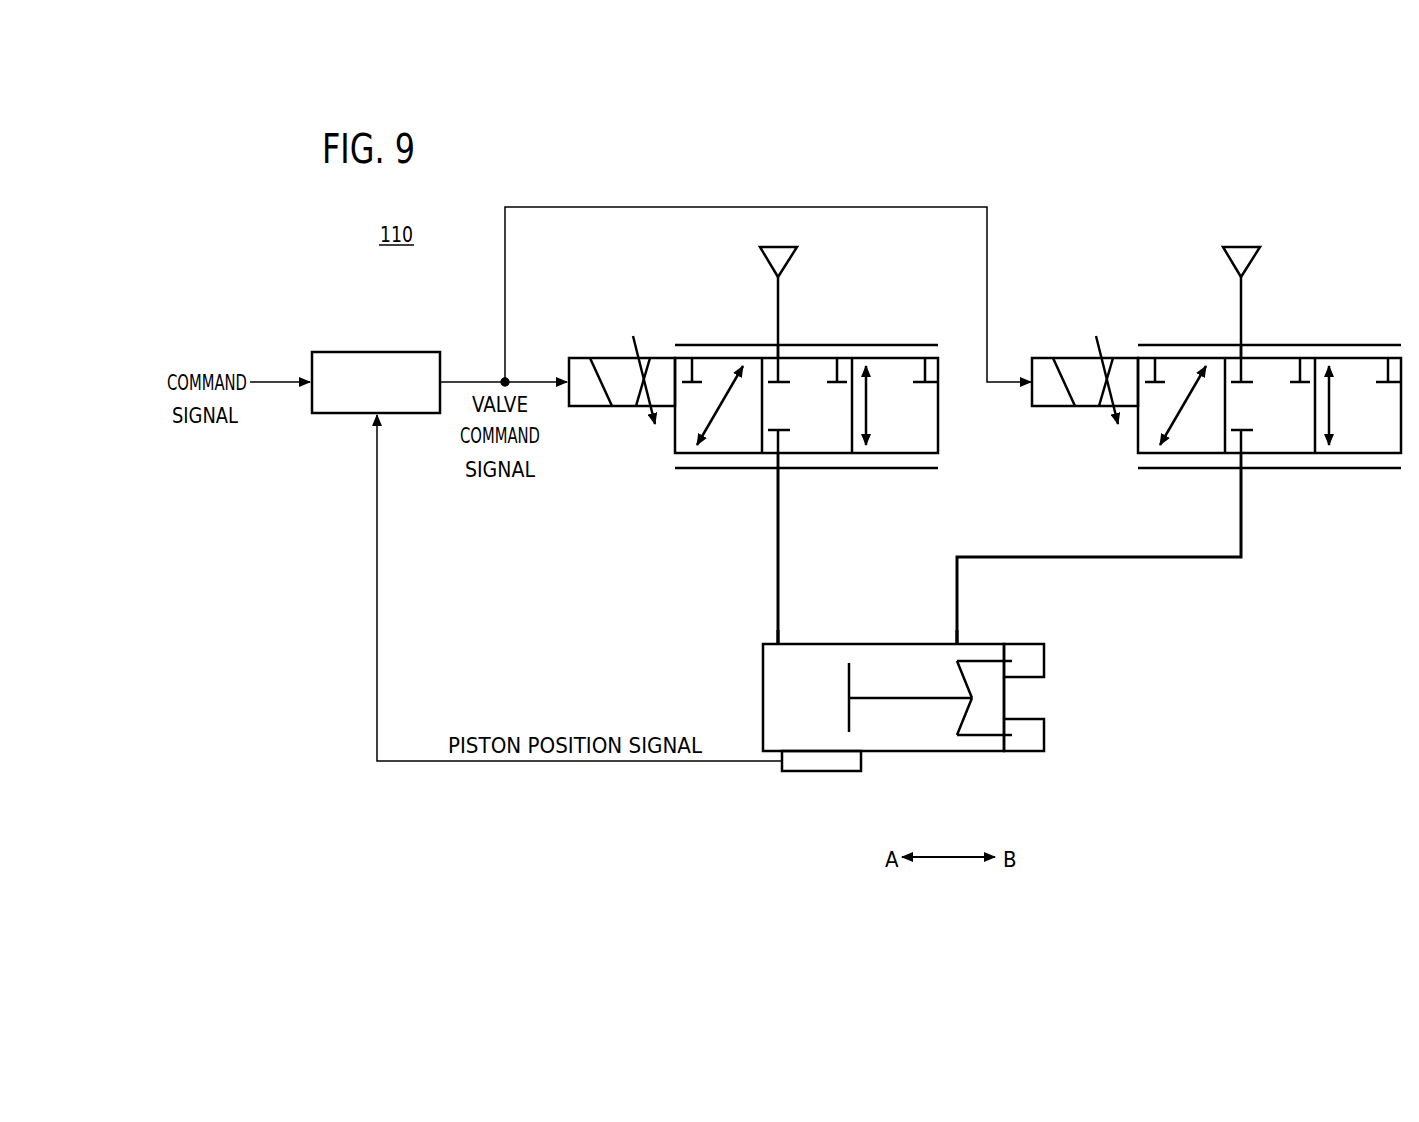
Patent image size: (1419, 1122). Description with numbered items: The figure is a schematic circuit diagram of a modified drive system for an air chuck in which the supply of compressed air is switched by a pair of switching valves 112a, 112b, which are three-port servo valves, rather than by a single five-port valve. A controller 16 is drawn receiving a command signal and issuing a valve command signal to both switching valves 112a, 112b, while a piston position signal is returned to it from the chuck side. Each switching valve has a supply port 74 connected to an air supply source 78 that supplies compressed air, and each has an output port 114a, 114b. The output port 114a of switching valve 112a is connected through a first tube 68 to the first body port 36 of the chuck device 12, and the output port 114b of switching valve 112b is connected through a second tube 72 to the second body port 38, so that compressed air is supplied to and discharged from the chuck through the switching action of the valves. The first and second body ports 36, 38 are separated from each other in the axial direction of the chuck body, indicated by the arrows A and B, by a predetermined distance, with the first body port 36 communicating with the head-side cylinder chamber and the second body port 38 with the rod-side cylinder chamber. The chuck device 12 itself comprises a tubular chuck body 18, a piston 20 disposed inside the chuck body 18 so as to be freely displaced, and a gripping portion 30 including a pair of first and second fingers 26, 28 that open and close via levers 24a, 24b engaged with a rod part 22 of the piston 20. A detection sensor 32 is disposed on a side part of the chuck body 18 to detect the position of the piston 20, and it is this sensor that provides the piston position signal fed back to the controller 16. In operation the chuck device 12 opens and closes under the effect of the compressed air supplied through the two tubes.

The controller 16 is at (372, 352).
The switching valve 112a is at (617, 431).
The switching valve 112b is at (1080, 431).
The air supply source 78 is at (766, 262).
The supply port 74 is at (781, 355).
The output port 114a is at (773, 455).
The output port 114b is at (1237, 455).
The first tube 68 is at (781, 524).
The second tube 72 is at (1244, 524).
The chuck device 12 is at (911, 704).
The chuck body 18 is at (915, 753).
The piston 20 is at (848, 686).
The rod part 22 is at (864, 696).
The lever 24a is at (985, 662).
The lever 24b is at (985, 734).
The first finger 26 is at (1038, 662).
The second finger 28 is at (1038, 737).
The gripping portion 30 is at (1028, 760).
The detection sensor 32 is at (821, 772).
The first body port 36 is at (776, 642).
The second body port 38 is at (955, 642).